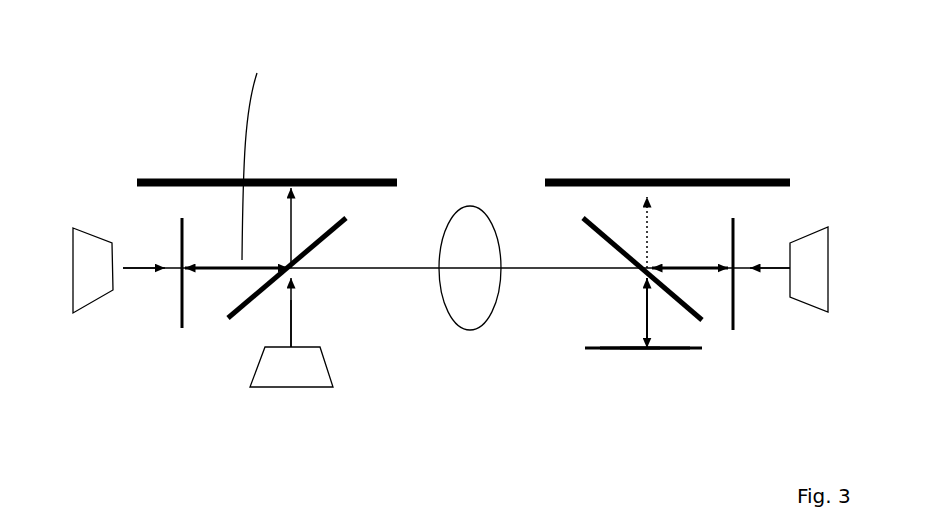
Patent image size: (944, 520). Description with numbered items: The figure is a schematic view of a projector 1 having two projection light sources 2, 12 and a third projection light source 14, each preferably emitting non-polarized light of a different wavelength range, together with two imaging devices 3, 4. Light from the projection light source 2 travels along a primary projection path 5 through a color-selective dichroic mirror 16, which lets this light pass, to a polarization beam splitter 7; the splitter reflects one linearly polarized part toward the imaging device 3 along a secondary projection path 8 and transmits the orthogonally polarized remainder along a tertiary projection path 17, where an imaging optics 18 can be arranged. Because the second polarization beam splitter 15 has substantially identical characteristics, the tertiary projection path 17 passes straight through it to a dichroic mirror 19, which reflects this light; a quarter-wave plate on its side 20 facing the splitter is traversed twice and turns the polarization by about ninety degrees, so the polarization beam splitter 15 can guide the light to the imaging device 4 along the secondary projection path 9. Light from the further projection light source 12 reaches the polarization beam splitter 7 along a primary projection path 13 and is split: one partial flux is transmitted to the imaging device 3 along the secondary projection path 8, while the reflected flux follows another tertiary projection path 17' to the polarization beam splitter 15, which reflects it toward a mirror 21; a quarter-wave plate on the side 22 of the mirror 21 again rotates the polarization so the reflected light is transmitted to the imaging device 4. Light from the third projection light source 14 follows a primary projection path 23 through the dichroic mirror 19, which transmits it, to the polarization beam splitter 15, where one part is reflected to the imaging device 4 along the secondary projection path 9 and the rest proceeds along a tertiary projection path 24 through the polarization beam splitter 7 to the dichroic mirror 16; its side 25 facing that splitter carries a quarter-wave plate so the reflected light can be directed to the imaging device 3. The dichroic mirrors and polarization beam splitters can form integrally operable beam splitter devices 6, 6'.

The projector 1 is at (528, 117).
The projection light source 2 is at (92, 325).
The imaging device 3 is at (152, 165).
The imaging device 4 is at (710, 175).
The primary projection path 5 is at (138, 255).
The beam splitter device 6 is at (330, 325).
The beam splitter device 6' is at (615, 421).
The polarization beam splitter 7 is at (323, 227).
The secondary projection path 8 is at (297, 237).
The secondary projection path 9 is at (645, 230).
The projection light source 12 is at (305, 392).
The primary projection path 13 is at (287, 320).
The third projection light source 14 is at (813, 310).
The polarization beam splitter 15 is at (630, 255).
The dichroic mirror 16 is at (184, 287).
The tertiary projection path 17 is at (603, 383).
The tertiary projection path 17' is at (692, 379).
The imaging optics 18 is at (440, 273).
The dichroic mirror 19 is at (733, 238).
The side 20 is at (728, 225).
The dichroic mirror 21 is at (610, 352).
The side 22 is at (603, 340).
The primary projection path 23 is at (765, 265).
The tertiary projection path 24 is at (389, 262).
The side 25 is at (182, 235).